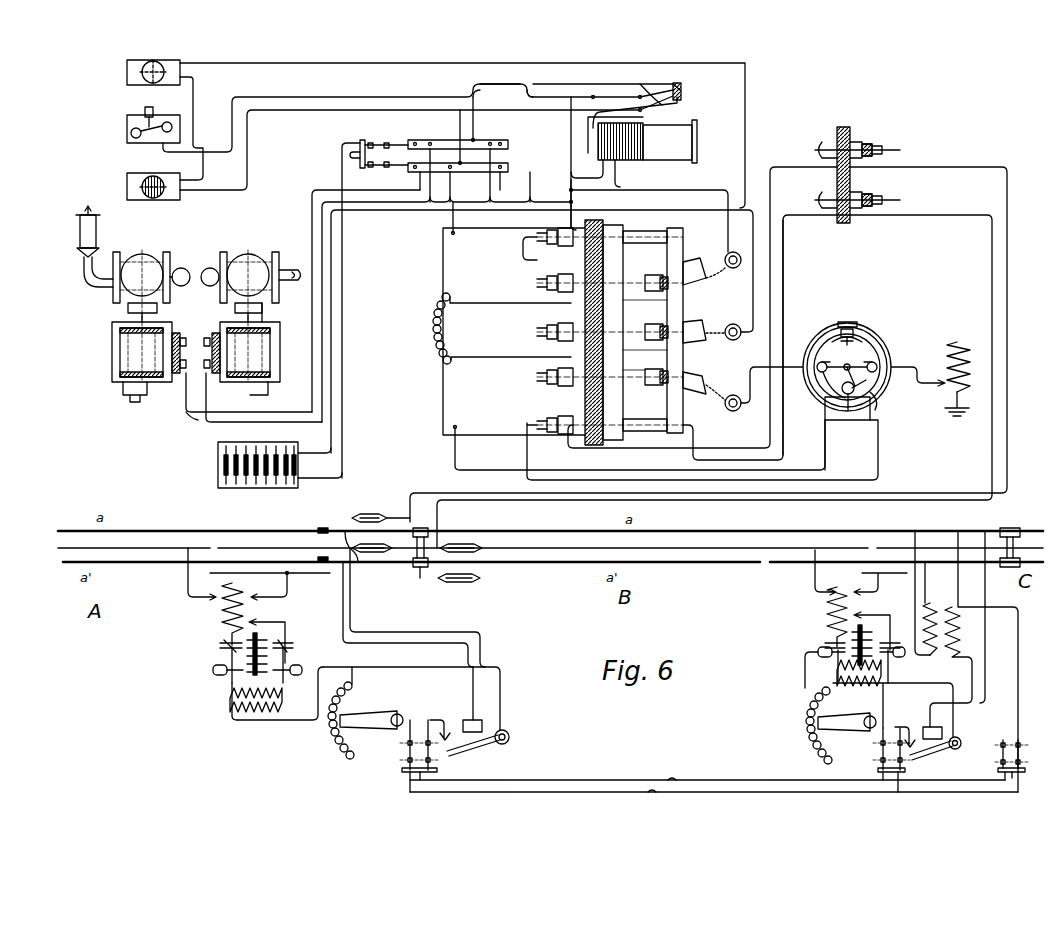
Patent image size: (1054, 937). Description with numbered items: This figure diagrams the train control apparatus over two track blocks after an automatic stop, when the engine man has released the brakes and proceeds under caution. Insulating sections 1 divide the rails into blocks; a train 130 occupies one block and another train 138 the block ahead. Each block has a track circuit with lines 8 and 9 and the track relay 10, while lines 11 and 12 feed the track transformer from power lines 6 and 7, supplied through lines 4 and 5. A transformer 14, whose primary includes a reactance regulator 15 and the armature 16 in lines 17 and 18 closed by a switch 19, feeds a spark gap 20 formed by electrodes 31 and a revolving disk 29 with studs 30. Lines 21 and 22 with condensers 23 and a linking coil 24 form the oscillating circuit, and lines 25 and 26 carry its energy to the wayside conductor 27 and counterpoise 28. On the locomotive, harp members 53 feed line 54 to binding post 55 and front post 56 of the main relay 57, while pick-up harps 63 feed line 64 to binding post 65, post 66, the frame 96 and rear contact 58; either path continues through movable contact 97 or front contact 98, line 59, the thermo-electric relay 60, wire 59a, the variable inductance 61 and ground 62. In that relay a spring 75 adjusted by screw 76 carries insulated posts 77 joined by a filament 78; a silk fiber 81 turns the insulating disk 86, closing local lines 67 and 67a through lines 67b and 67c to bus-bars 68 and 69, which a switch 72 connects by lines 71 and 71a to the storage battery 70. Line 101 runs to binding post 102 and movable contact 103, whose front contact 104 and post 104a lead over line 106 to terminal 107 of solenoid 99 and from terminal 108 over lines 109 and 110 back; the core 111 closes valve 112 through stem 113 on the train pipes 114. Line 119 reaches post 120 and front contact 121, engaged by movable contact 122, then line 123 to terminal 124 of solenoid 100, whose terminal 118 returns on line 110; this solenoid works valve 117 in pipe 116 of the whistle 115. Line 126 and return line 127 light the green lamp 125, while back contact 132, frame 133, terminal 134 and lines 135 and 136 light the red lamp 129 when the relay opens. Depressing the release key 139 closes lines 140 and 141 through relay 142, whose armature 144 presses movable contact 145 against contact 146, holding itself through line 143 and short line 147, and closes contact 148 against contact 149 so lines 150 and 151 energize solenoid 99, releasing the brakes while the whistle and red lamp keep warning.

The sections of insulating material 1 is at (322, 528).
The line 4 is at (648, 794).
The line 5 is at (680, 780).
The line of the block system 6 is at (570, 792).
The line of the block system 7 is at (574, 780).
The line 8 is at (416, 632).
The line 9 is at (388, 643).
The track relay 10 is at (466, 718).
The line 11 is at (1002, 738).
The line 12 is at (1018, 684).
The transformer 14 is at (230, 720).
The reactance regulator 15 is at (330, 752).
The armature 16 is at (478, 748).
The line 17 is at (422, 667).
The line 18 is at (280, 722).
The switch 19 is at (400, 770).
The spark gap 20 is at (232, 700).
The line 21 is at (270, 622).
The line 22 is at (212, 665).
The condenser 23 is at (218, 646).
The inductance or linking coil 24 is at (222, 614).
The line 25 is at (186, 590).
The line 26 is at (290, 582).
The conductor 27 is at (260, 524).
The counterpoise 28 is at (265, 573).
The revolving disk 29 is at (262, 630).
The conducting studs 30 is at (270, 640).
The spark gap electrodes 31 is at (230, 672).
The harp members 53 is at (460, 544).
The line 54 is at (935, 215).
The binding post 55 is at (880, 186).
The front binding post 56 is at (545, 378).
The main relay 57 is at (462, 326).
The rear contact 58 is at (680, 390).
The line 59 is at (740, 410).
The receiving circuit wire 59a is at (922, 384).
The thermo-electric relay 60 is at (892, 352).
The variable inductance 61 is at (960, 342).
The ground 62 is at (970, 400).
The harp-like elements 63 is at (362, 516).
The line 64 is at (980, 167).
The binding post 65 is at (840, 127).
The front binding post 66 is at (545, 436).
The line 67 is at (429, 260).
The line 67a is at (450, 214).
The line 67b is at (824, 420).
The line 67c is at (876, 412).
The positive bus-bar 68 is at (428, 139).
The negative bus-bar 69 is at (455, 175).
The storage battery 70 is at (218, 468).
The line 71 is at (344, 315).
The line 71a is at (333, 360).
The switch 72 is at (360, 153).
The spring 75 is at (880, 343).
The adjusting screw 76 is at (847, 322).
The insulated posts 77 is at (820, 360).
The fine wire filament 78 is at (852, 372).
The silk fiber 81 is at (820, 390).
The disk 86 is at (848, 416).
The metallic frame 96 is at (687, 434).
The movable contact 97 is at (655, 386).
The front contact 98 is at (618, 388).
The solenoid 99 is at (262, 352).
The solenoid 100 is at (128, 351).
The line 101 is at (688, 190).
The binding post 102 is at (728, 253).
The movable relay contact 103 is at (700, 262).
The relay contact 104 is at (650, 275).
The binding post 104a is at (545, 285).
The line 106 is at (320, 225).
The terminal 107 is at (212, 335).
The terminal 108 is at (207, 386).
The line 109 is at (192, 414).
The line 110 is at (310, 196).
The core 111 is at (270, 388).
The valve 112 is at (244, 254).
The stem 113 is at (262, 312).
The train pipes 114 is at (290, 268).
The whistle 115 is at (80, 234).
The air or steam pipe 116 is at (84, 278).
The valve 117 is at (150, 254).
The coil terminal 118 is at (184, 392).
The line 119 is at (500, 243).
The binding post 120 is at (542, 328).
The front contact 121 is at (640, 338).
The movable contact 122 is at (698, 338).
The line 123 is at (332, 244).
The terminal 124 is at (180, 330).
The colored lamp 125 is at (148, 60).
The line 126 is at (272, 63).
The return line 127 is at (394, 108).
The red light 129 is at (127, 174).
The train 130 is at (420, 576).
The back contact 132 is at (672, 288).
The metallic frame 133 is at (660, 228).
The binding terminal 134 is at (540, 236).
The line 135 is at (573, 203).
The line 136 is at (200, 186).
The train 138 is at (1010, 528).
The release key 139 is at (127, 126).
The line 140 is at (262, 104).
The line 141 is at (617, 183).
The relay 142 is at (705, 135).
The line 143 is at (568, 132).
The armature 144 is at (582, 170).
The movable contact 145 is at (648, 105).
The contact 146 is at (676, 83).
The short line 147 is at (505, 80).
The movable contact 148 is at (606, 80).
The contact 149 is at (645, 85).
The line 150 is at (470, 88).
The line 151 is at (532, 90).